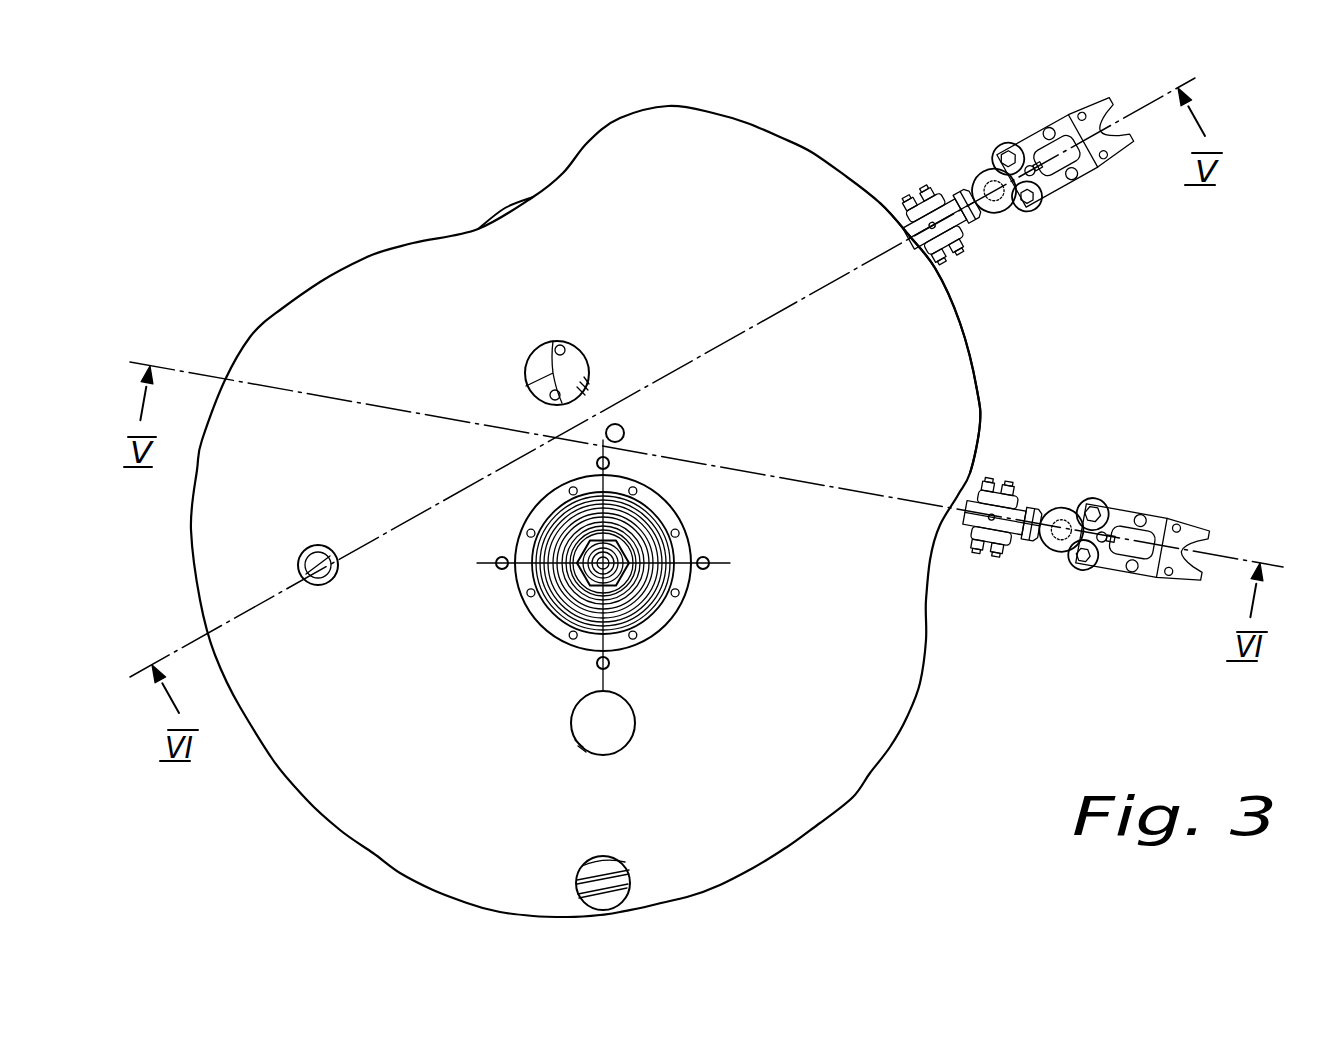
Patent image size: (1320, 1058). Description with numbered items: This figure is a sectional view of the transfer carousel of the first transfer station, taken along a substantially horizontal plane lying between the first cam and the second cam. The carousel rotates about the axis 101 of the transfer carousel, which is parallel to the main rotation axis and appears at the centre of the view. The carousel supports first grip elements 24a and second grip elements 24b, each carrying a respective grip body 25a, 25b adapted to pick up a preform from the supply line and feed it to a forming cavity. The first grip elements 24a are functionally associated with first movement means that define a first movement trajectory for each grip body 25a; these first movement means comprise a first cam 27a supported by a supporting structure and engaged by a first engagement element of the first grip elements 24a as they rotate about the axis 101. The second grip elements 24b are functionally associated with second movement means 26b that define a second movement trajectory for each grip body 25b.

The second movement means 26b is at (843, 145).
The first cam 27a is at (975, 348).
The first grip elements 24a is at (988, 128).
The second grip elements 24b is at (1087, 476).
The grip body 25a is at (1084, 202).
The grip body 25b is at (1161, 490).
The axis of the transfer carousel 101 is at (645, 584).